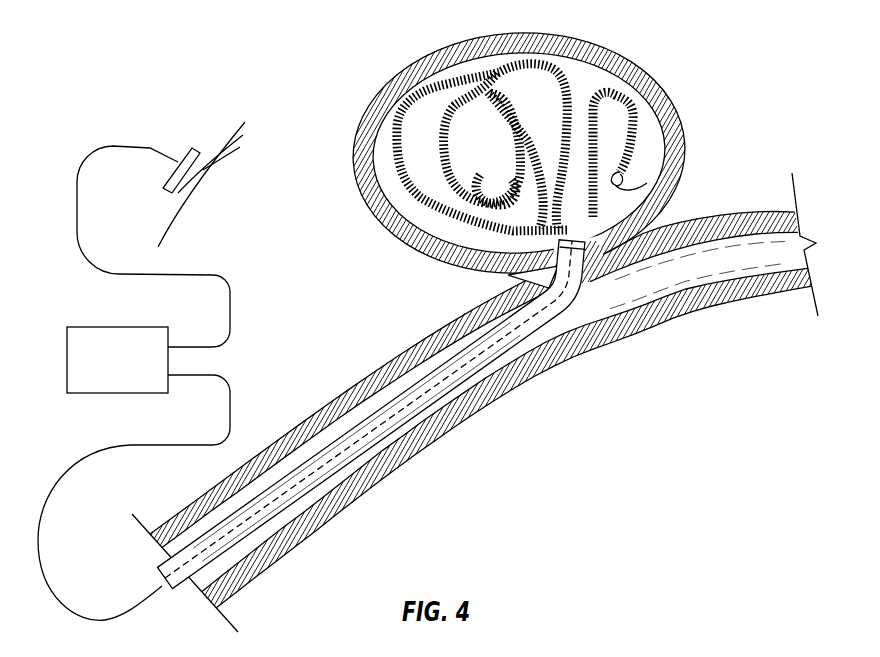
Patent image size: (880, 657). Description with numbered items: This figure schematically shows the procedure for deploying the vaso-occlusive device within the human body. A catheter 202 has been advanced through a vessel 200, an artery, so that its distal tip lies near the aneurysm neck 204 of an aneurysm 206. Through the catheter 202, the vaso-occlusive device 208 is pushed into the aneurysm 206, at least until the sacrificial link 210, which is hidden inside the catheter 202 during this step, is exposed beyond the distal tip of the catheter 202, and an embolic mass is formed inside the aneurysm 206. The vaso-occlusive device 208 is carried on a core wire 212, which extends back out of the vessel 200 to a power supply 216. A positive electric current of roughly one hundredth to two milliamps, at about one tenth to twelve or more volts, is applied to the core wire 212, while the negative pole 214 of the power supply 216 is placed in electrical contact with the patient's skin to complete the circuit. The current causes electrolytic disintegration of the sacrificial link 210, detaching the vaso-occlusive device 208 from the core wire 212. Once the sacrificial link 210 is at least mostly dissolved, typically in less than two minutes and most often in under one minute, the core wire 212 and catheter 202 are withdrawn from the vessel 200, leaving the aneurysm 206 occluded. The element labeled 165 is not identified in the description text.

The vessel 200 is at (361, 383).
The catheter 202 is at (413, 423).
The aneurysm neck 204 is at (607, 252).
The aneurysm 206 is at (622, 55).
The vaso-occlusive device 208 is at (640, 112).
The sacrificial link 210 is at (548, 272).
The core wire 212 is at (349, 441).
The negative pole 214 is at (217, 137).
The power supply 216 is at (136, 374).
The electrolytic detachment zone 165 is at (640, 188).